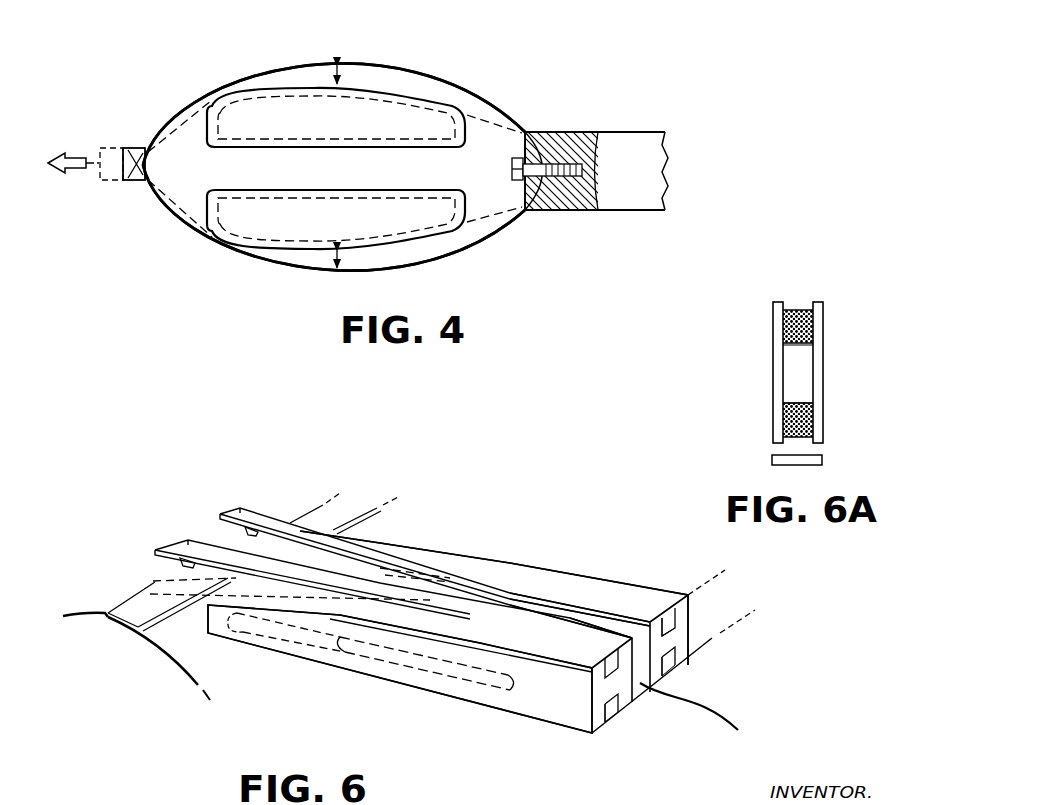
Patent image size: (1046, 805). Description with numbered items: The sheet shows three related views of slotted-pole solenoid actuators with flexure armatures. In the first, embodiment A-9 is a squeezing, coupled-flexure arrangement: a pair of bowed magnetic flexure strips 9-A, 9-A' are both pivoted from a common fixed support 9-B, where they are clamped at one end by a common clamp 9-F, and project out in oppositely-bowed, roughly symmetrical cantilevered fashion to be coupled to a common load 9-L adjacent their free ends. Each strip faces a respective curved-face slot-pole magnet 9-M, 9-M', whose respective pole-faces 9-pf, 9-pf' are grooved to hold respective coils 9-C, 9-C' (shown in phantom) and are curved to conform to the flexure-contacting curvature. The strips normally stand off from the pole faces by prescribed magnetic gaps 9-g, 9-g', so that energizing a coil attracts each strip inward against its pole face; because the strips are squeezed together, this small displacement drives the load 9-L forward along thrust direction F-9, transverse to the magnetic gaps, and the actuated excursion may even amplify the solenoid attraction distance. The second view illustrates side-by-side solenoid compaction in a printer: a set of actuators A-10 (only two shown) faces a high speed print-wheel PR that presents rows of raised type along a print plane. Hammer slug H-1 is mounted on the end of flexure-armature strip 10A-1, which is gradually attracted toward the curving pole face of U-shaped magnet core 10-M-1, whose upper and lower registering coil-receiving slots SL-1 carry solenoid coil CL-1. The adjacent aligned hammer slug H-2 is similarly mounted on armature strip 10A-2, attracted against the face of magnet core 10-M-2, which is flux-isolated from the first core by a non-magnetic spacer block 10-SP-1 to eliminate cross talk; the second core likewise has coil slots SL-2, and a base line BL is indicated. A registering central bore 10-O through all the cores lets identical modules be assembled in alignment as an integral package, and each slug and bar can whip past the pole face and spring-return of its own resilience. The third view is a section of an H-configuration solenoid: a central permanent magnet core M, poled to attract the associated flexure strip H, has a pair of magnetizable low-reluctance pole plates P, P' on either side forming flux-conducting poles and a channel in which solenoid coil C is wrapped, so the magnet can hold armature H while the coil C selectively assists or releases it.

In FIG. 4, the actuator embodiment A-9 is at (190, 232).
In FIG. 4, the bowed magnetic flexure strip 9-A is at (350, 114).
In FIG. 4, the bowed magnetic flexure strip 9-A' is at (358, 218).
In FIG. 4, the pole-face 9-pf is at (355, 96).
In FIG. 4, the pole-face 9-pf' is at (351, 237).
In FIG. 4, the coil 9-C is at (336, 117).
In FIG. 4, the coil 9-C' is at (336, 219).
In FIG. 4, the magnetic gap 9-g is at (377, 58).
In FIG. 4, the magnetic gap 9-g' is at (299, 273).
In FIG. 4, the curved-face slot-pole magnet 9-M is at (336, 161).
In FIG. 4, the curved-face slot-pole magnet 9-M' is at (336, 179).
In FIG. 4, the common load 9-L is at (143, 148).
In FIG. 4, the thrust direction F-9 is at (67, 156).
In FIG. 4, the common fixed support 9-B is at (652, 189).
In FIG. 4, the common clamp 9-F is at (540, 150).
In FIG. 6A, the pole plate P' is at (755, 372).
In FIG. 6A, the pole plate P is at (832, 372).
In FIG. 6A, the solenoid coil C is at (800, 310).
In FIG. 6A, the permanent magnet core M is at (805, 375).
In FIG. 6A, the flexure strip H is at (822, 460).
In FIG. 6, the print-wheel PR is at (172, 697).
In FIG. 6, the set of actuators A-10 is at (318, 683).
In FIG. 6, the flexure-armature strip 10A-1 is at (563, 652).
In FIG. 6, the flexure-armature strip 10A-2 is at (607, 590).
In FIG. 6, the base line BL is at (696, 690).
In FIG. 6, the non-magnetic spacer block 10-SP-1 is at (735, 713).
In FIG. 6, the coil-receiving slots SL-1 is at (632, 688).
In FIG. 6, the second slot SL-2 is at (665, 673).
In FIG. 6, the magnet core 10-M-1 is at (446, 686).
In FIG. 6, the magnet core 10-M-2 is at (675, 640).
In FIG. 6, the solenoid coil CL-1 is at (568, 662).
In FIG. 6, the central bore 10-O is at (382, 653).
In FIG. 6, the hammer slug H-1 is at (172, 545).
In FIG. 6, the hammer slug H-2 is at (246, 516).